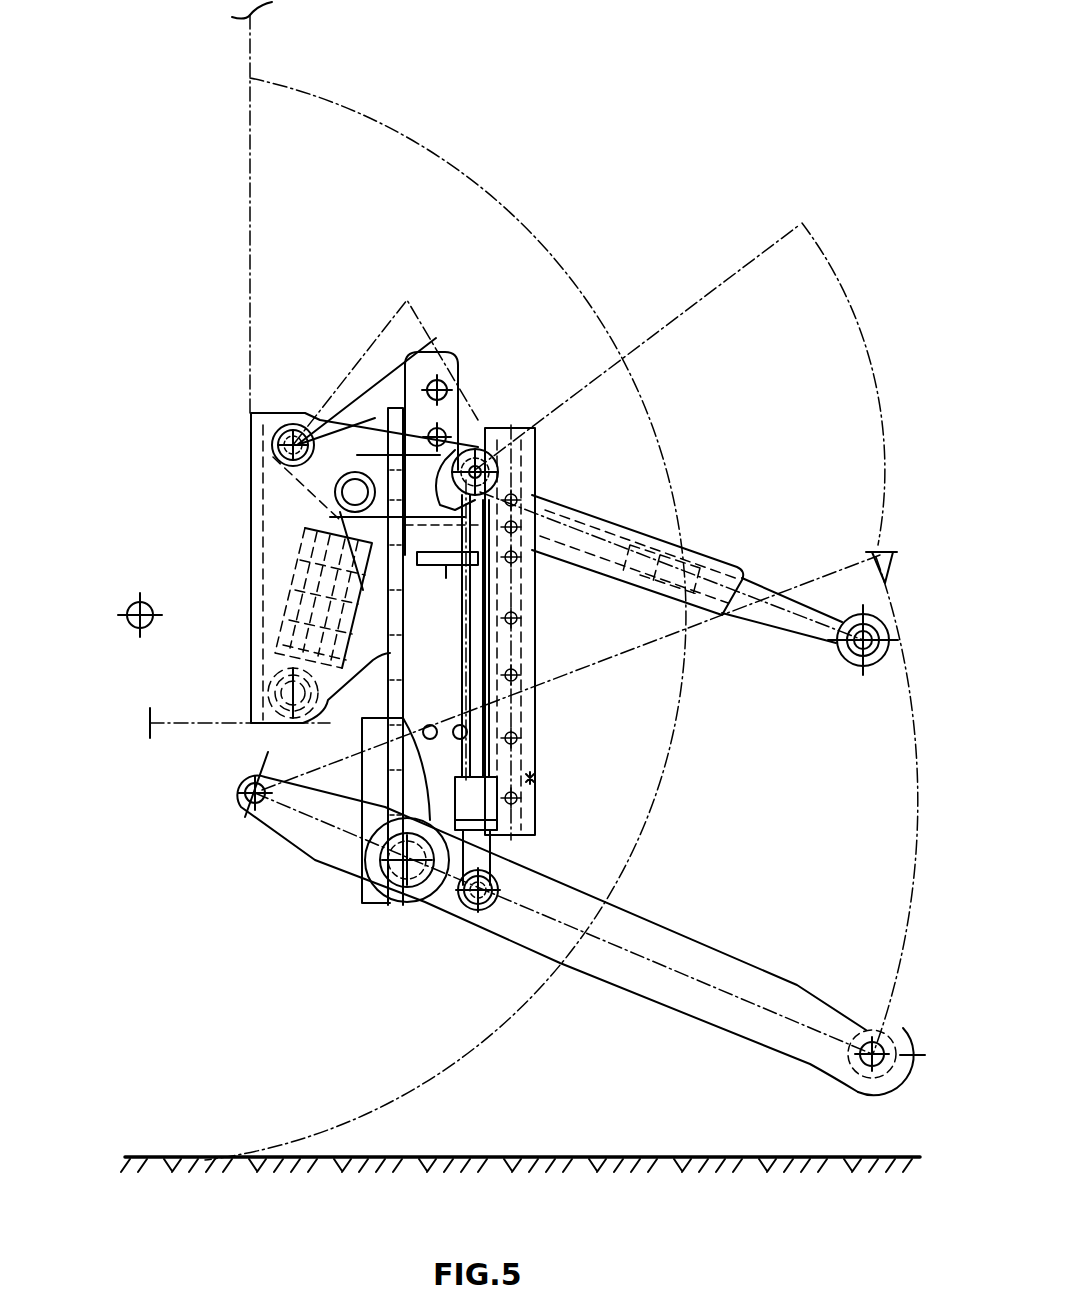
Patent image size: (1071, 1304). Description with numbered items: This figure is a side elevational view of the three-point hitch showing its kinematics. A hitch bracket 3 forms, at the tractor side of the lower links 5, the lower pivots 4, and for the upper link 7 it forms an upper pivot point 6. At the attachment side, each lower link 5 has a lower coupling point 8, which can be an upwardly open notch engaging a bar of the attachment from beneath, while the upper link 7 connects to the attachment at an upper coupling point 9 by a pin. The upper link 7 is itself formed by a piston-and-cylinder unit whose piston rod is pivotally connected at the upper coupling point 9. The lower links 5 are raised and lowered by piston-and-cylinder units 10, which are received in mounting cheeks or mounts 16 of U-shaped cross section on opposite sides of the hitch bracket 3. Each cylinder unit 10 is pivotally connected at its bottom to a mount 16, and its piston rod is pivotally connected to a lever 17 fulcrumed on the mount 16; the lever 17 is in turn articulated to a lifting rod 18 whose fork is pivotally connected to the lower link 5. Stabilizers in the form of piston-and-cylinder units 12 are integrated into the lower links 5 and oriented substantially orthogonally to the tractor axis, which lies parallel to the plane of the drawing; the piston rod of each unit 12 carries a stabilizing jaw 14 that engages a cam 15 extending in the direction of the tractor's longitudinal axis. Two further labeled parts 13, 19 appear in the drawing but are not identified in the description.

The hitch bracket 3 is at (238, 444).
The lower pivots 4 is at (246, 793).
The lower links 5 is at (740, 1020).
The upper pivot point 6 is at (483, 452).
The upper link 7 is at (624, 530).
The lower coupling points 8 is at (872, 1042).
The upper coupling point 9 is at (850, 669).
The piston-and-cylinder units 10 is at (347, 597).
The stabilizers 12 is at (367, 860).
The pivot pin 13 is at (407, 888).
The stabilizing jaw 14 is at (458, 888).
The cam 15 is at (363, 735).
The mounts 16 is at (255, 495).
The levers 17 is at (377, 440).
The lifting rods 18 is at (487, 722).
The piston rod 19 is at (780, 625).